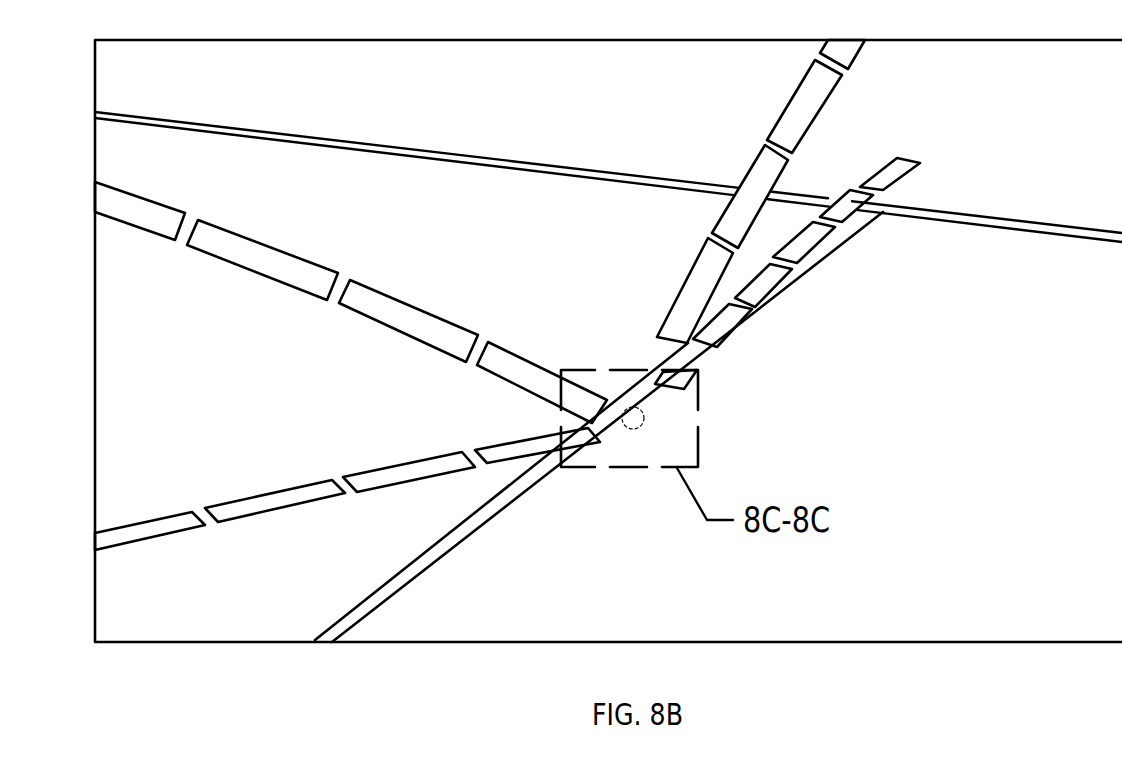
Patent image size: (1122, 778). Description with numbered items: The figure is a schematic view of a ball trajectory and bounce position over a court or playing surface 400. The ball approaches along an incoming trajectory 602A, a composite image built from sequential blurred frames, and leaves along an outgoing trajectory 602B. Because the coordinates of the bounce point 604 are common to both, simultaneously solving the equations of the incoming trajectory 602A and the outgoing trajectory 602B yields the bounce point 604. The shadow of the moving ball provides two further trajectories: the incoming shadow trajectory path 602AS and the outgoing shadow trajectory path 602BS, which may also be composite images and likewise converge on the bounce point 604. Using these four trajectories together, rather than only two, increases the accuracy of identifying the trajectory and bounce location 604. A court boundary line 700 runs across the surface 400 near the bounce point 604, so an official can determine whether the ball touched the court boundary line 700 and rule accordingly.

The court or playing surface 400 is at (571, 268).
The incoming trajectory 602A is at (268, 243).
The incoming shadow trajectory path 602AS is at (268, 493).
The outgoing trajectory 602B is at (789, 97).
The outgoing shadow trajectory path 602BS is at (903, 158).
The bounce point 604 is at (633, 430).
The court boundary line 700 is at (473, 537).